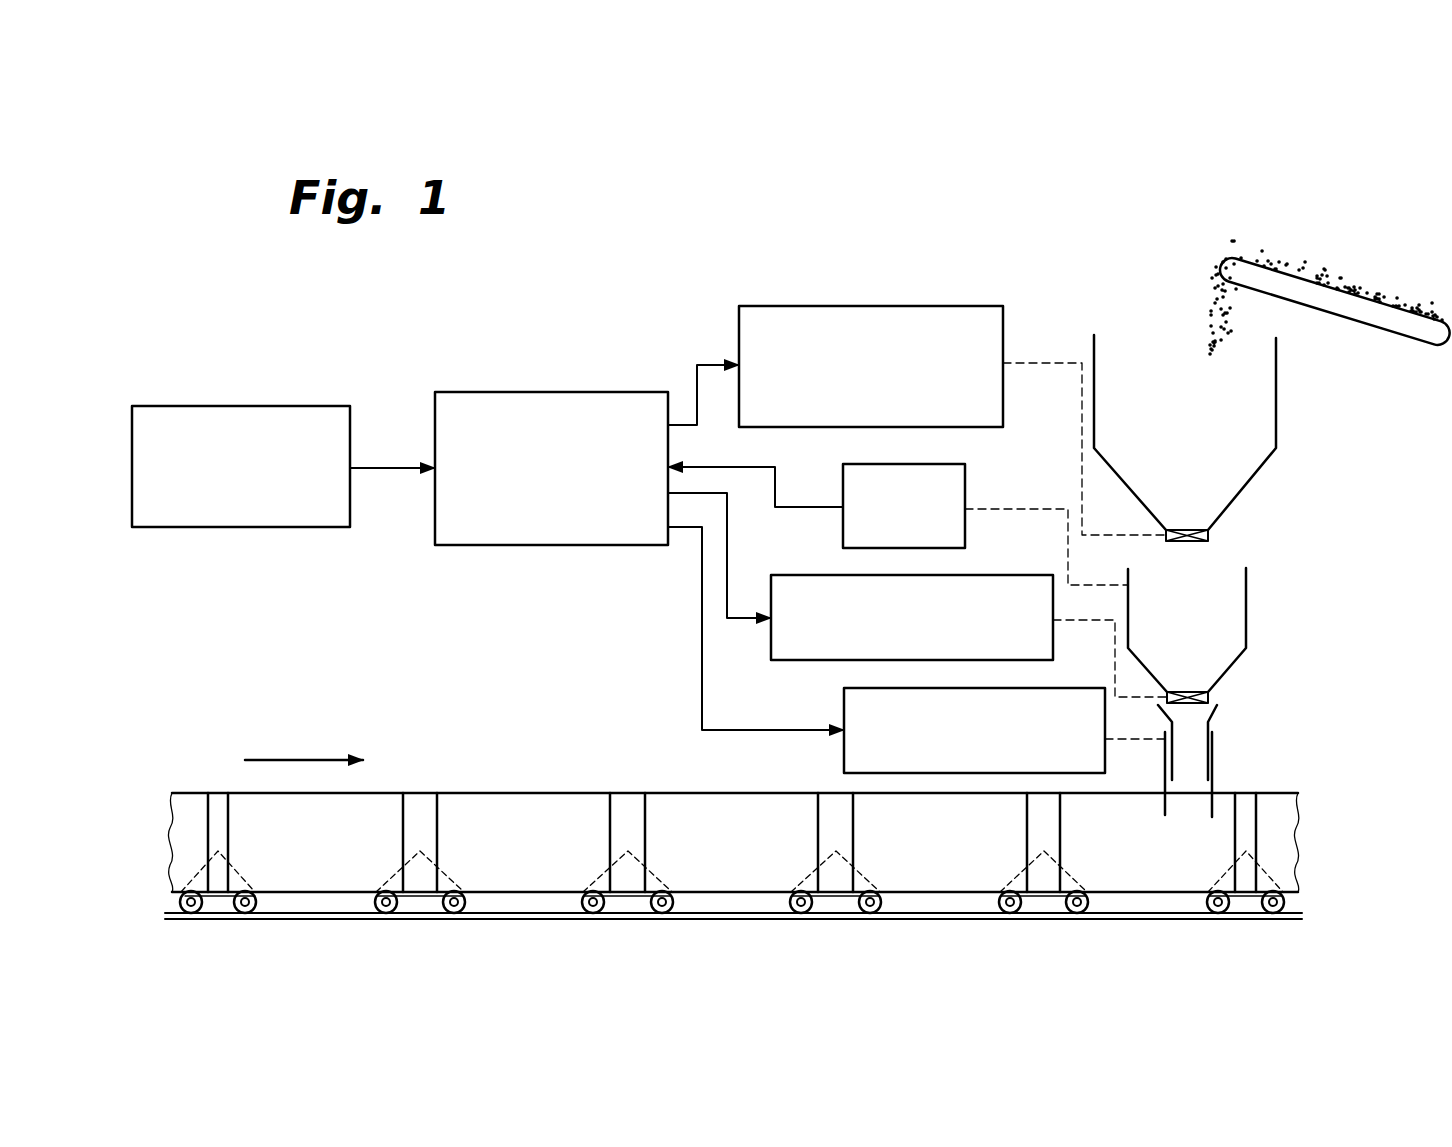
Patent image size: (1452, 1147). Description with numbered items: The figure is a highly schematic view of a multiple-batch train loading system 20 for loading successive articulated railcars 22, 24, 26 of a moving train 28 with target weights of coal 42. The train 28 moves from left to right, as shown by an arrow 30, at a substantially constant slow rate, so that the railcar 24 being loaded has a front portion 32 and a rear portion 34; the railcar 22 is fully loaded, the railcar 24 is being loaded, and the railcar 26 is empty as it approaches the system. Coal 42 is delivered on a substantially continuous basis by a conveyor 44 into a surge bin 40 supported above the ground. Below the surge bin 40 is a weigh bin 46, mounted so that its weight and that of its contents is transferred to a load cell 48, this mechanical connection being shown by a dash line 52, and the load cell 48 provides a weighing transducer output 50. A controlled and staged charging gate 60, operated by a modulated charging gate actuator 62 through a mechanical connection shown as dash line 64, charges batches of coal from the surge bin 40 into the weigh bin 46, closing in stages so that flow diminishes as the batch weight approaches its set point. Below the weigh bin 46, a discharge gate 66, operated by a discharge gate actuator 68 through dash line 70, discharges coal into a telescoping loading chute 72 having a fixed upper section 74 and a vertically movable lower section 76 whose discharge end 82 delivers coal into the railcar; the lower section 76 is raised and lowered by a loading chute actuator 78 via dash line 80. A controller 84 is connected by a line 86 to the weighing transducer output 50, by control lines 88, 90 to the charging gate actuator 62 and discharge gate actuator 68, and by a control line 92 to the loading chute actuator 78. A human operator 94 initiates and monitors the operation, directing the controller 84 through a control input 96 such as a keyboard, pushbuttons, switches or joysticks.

The multiple-batch train loading system 20 is at (662, 214).
The articulated railcar 22 is at (1286, 802).
The articulated railcar 24 is at (778, 792).
The articulated railcar 26 is at (187, 793).
The moving train 28 is at (413, 719).
The arrow 30 is at (305, 758).
The front portion 32 is at (1242, 765).
The rear portion 34 is at (748, 787).
The surge bin 40 is at (1277, 360).
The coal 42 is at (1288, 256).
The conveyor 44 is at (1380, 336).
The weigh bin 46 is at (1246, 586).
The load cell 48 is at (940, 464).
The weighing transducer output 50 is at (806, 508).
The dash line 52 is at (1027, 510).
The charging gate 60 is at (1210, 538).
The modulated charging gate actuator 62 is at (845, 306).
The dash line 64 is at (1037, 358).
The discharge gate 66 is at (1209, 693).
The discharge gate actuator 68 is at (803, 660).
The dash line 70 is at (1070, 620).
The telescoping loading chute 72 is at (1266, 680).
The fixed upper section 74 is at (1214, 722).
The vertically movable lower section 76 is at (1163, 783).
The loading chute actuator 78 is at (844, 752).
The dash line 80 is at (1139, 741).
The discharge end 82 is at (1167, 819).
The controller 84 is at (553, 392).
The line 86 is at (740, 465).
The control line 88 is at (701, 366).
The control line 90 is at (727, 583).
The control line 92 is at (702, 673).
The human operator 94 is at (238, 406).
The control input 96 is at (383, 466).